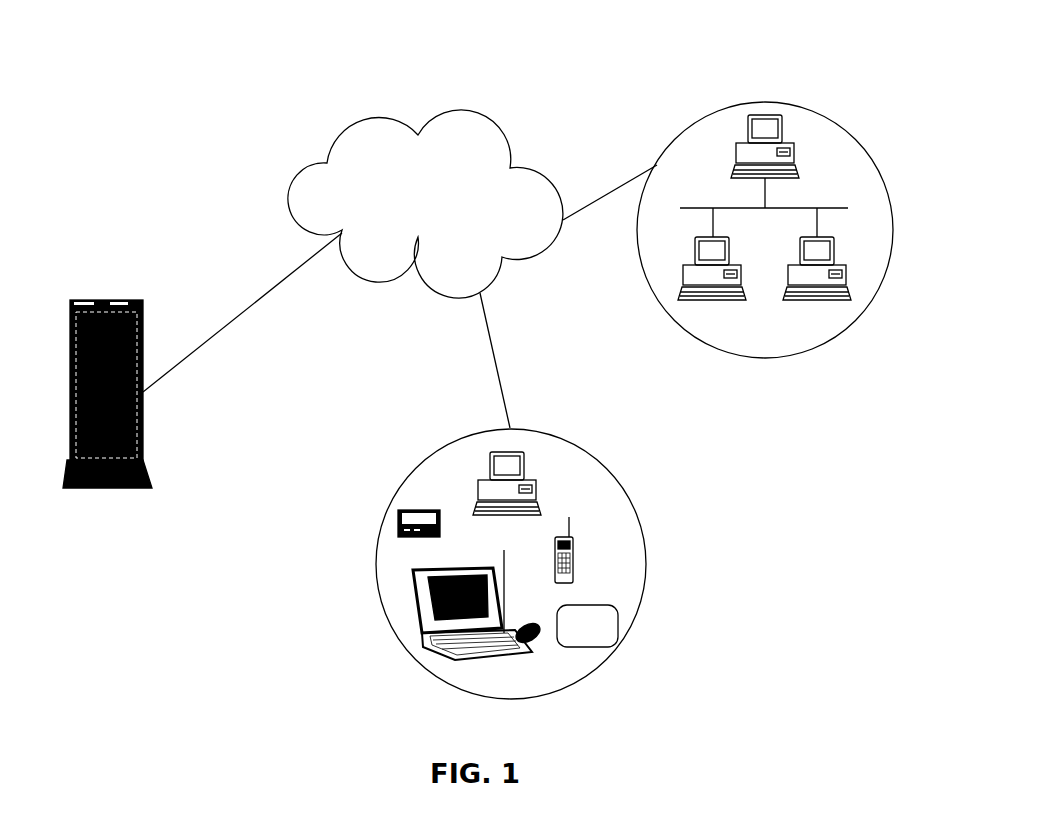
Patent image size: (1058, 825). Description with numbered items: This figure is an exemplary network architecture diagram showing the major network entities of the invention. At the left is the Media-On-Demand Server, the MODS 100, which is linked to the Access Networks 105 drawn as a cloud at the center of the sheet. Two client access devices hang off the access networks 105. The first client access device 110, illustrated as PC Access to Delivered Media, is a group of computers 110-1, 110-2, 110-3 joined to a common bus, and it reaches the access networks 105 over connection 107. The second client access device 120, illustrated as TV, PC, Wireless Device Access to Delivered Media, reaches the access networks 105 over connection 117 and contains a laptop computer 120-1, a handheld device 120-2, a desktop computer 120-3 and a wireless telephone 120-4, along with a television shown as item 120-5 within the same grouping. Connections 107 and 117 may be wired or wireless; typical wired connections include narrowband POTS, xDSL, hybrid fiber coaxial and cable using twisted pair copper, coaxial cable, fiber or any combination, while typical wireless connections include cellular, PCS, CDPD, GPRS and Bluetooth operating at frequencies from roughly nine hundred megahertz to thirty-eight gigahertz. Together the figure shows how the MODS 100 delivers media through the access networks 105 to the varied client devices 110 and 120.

The MODS 100 is at (150, 478).
The access networks 105 is at (425, 204).
The connection 107 is at (606, 194).
The first client access device 110 is at (672, 138).
The computer 110-1 is at (793, 150).
The computer 110-2 is at (845, 262).
The computer 110-3 is at (684, 297).
The connection 117 is at (495, 358).
The second client access device 120 is at (635, 495).
The laptop computer 120-1 is at (504, 660).
The handheld device 120-2 is at (405, 510).
The desktop computer 120-3 is at (533, 482).
The wireless telephone 120-4 is at (576, 548).
The television 120-5 is at (620, 633).